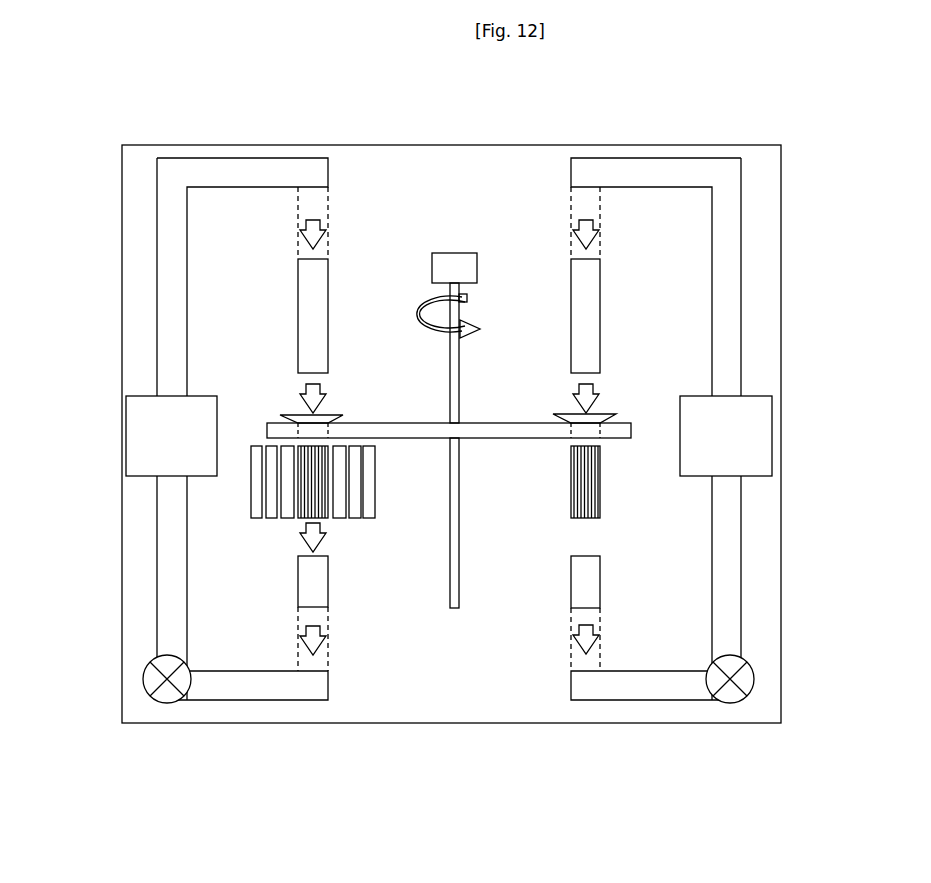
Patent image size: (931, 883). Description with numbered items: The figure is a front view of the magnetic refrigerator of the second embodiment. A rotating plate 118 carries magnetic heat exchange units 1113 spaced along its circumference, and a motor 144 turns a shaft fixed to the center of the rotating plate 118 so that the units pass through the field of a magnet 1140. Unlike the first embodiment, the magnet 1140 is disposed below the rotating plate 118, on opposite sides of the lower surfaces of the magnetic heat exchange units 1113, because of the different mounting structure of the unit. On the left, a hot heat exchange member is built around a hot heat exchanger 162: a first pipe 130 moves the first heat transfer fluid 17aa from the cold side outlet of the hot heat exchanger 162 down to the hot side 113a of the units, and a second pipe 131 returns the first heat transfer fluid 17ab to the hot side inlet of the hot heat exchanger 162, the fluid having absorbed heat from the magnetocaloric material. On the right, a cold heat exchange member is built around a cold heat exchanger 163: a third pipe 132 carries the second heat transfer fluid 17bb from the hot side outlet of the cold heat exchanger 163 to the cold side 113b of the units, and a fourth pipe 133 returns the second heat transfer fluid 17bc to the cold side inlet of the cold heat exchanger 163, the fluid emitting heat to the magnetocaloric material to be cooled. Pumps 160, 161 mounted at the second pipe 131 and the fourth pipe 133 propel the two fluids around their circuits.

The first pipe 130 is at (240, 138).
The second pipe 131 is at (241, 722).
The third pipe 132 is at (660, 138).
The fourth pipe 133 is at (661, 722).
The motor 144 is at (447, 238).
The first heat transfer fluid 17aa is at (318, 232).
The first heat transfer fluid 17ab is at (318, 634).
The second heat transfer fluid 17bb is at (580, 229).
The second heat transfer fluid 17bc is at (588, 636).
The hot side 113a is at (322, 432).
The cold side 113b is at (592, 432).
The rotating plate 118 is at (513, 423).
The hot heat exchanger 162 is at (126, 428).
The cold heat exchanger 163 is at (772, 425).
The pump 160 is at (143, 680).
The pump 161 is at (754, 680).
The magnetic heat exchange unit 1113 is at (298, 516).
The magnet 1140 is at (250, 484).